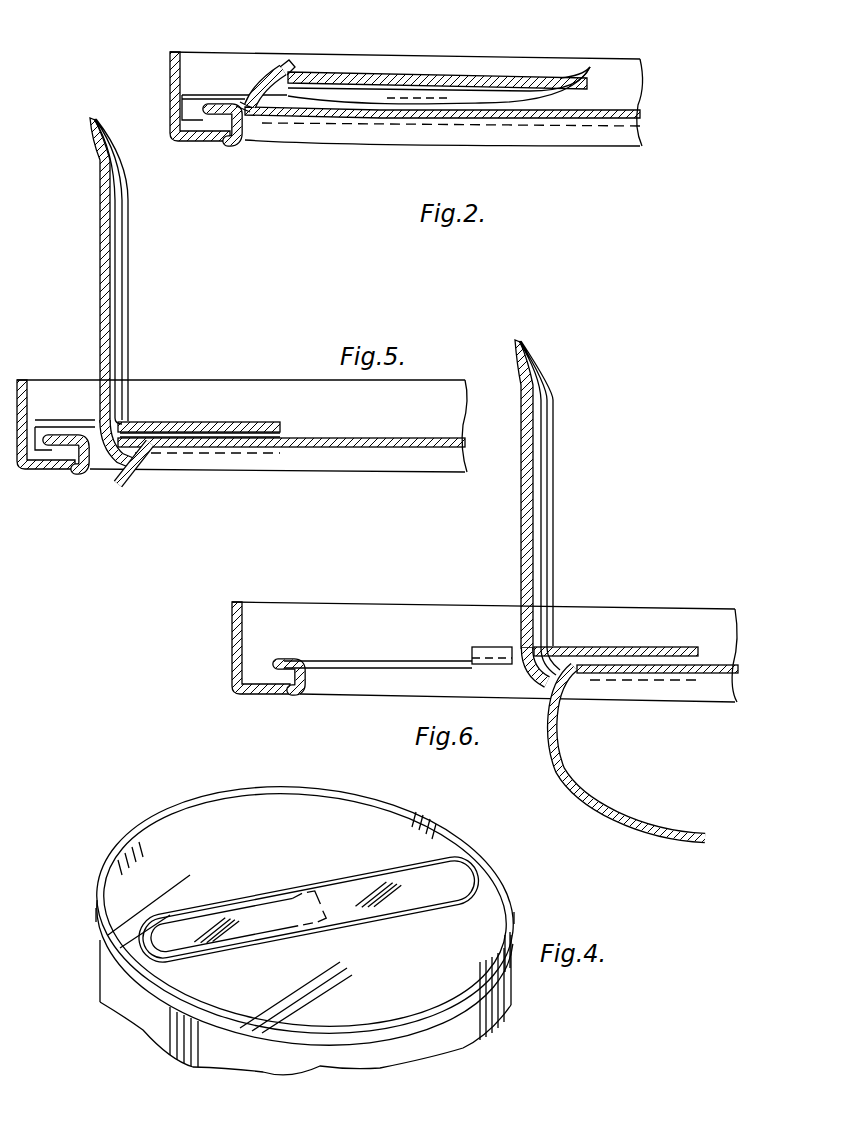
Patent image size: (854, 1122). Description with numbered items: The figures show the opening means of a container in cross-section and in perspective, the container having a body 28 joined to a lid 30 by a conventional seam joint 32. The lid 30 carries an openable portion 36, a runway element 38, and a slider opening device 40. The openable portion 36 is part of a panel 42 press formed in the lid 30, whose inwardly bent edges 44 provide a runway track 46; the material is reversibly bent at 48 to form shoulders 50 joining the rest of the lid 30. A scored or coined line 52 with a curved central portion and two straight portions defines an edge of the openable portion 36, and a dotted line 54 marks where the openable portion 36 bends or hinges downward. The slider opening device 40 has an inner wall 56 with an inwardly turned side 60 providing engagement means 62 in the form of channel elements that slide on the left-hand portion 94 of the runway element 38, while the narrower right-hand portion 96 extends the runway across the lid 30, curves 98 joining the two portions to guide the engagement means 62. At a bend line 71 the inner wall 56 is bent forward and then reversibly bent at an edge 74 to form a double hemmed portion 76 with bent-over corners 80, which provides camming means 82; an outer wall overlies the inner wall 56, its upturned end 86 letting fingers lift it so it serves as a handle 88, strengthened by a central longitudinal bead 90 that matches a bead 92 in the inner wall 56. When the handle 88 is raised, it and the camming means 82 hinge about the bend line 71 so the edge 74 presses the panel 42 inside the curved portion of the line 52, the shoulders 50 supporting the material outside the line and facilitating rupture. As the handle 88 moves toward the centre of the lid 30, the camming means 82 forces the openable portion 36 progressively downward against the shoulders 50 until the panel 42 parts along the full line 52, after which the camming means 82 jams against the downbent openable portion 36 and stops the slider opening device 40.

In FIG. 4, the body 28 is at (103, 978).
In FIG. 2, the lid 30 is at (190, 141).
In FIG. 5, the lid 30 is at (402, 472).
In FIG. 6, the lid 30 is at (690, 700).
In FIG. 4, the lid 30 is at (322, 815).
In FIG. 4, the seam joint 32 is at (100, 887).
In FIG. 2, the openable portion 36 is at (310, 118).
In FIG. 5, the openable portion 36 is at (128, 480).
In FIG. 6, the openable portion 36 is at (648, 828).
In FIG. 2, the runway element 38 is at (485, 119).
In FIG. 4, the runway element 38 is at (224, 926).
In FIG. 2, the slider opening device 40 is at (558, 73).
In FIG. 5, the slider opening device 40 is at (222, 421).
In FIG. 5, the panel 42 is at (230, 447).
In FIG. 2, the inwardly bent edges 44 is at (185, 108).
In FIG. 4, the inwardly bent edges 44 is at (420, 905).
In FIG. 4, the runway track 46 is at (309, 910).
In FIG. 2, the reverse bend 48 is at (231, 138).
In FIG. 2, the shoulders 50 is at (240, 142).
In FIG. 5, the shoulders 50 is at (88, 455).
In FIG. 6, the shoulders 50 is at (304, 690).
In FIG. 2, the scored or coined line 52 is at (248, 112).
In FIG. 5, the scored or coined line 52 is at (98, 452).
In FIG. 6, the scored or coined line 52 is at (318, 665).
In FIG. 4, the scored or coined line 52 is at (270, 895).
In FIG. 2, the hinge line 54 is at (520, 120).
In FIG. 5, the hinge line 54 is at (365, 438).
In FIG. 6, the hinge line 54 is at (588, 673).
In FIG. 4, the hinge line 54 is at (309, 908).
In FIG. 2, the inner wall 56 is at (415, 100).
In FIG. 5, the inner wall 56 is at (195, 437).
In FIG. 5, the inwardly turned side 60 is at (40, 425).
In FIG. 6, the inwardly turned side 60 is at (480, 658).
In FIG. 4, the engagement means 62 is at (345, 885).
In FIG. 2, the bend line 71 is at (315, 80).
In FIG. 5, the bend line 71 is at (118, 420).
In FIG. 2, the edge 74 is at (248, 100).
In FIG. 5, the edge 74 is at (140, 472).
In FIG. 2, the double hemmed portion 76 is at (280, 62).
In FIG. 2, the corners 80 is at (294, 64).
In FIG. 2, the camming means 82 is at (268, 65).
In FIG. 5, the camming means 82 is at (120, 465).
In FIG. 2, the upturned end 86 is at (593, 65).
In FIG. 5, the handle 88 is at (100, 230).
In FIG. 6, the handle 88 is at (533, 425).
In FIG. 2, the central longitudinal bead 90 is at (527, 80).
In FIG. 2, the central longitudinal bead 92 is at (430, 80).
In FIG. 5, the central longitudinal bead 92 is at (268, 422).
In FIG. 6, the central longitudinal bead 92 is at (628, 647).
In FIG. 6, the left-hand portion 94 is at (300, 661).
In FIG. 4, the left-hand portion 94 is at (258, 938).
In FIG. 4, the right-hand portion 96 is at (372, 880).
In FIG. 4, the curves 98 is at (300, 886).